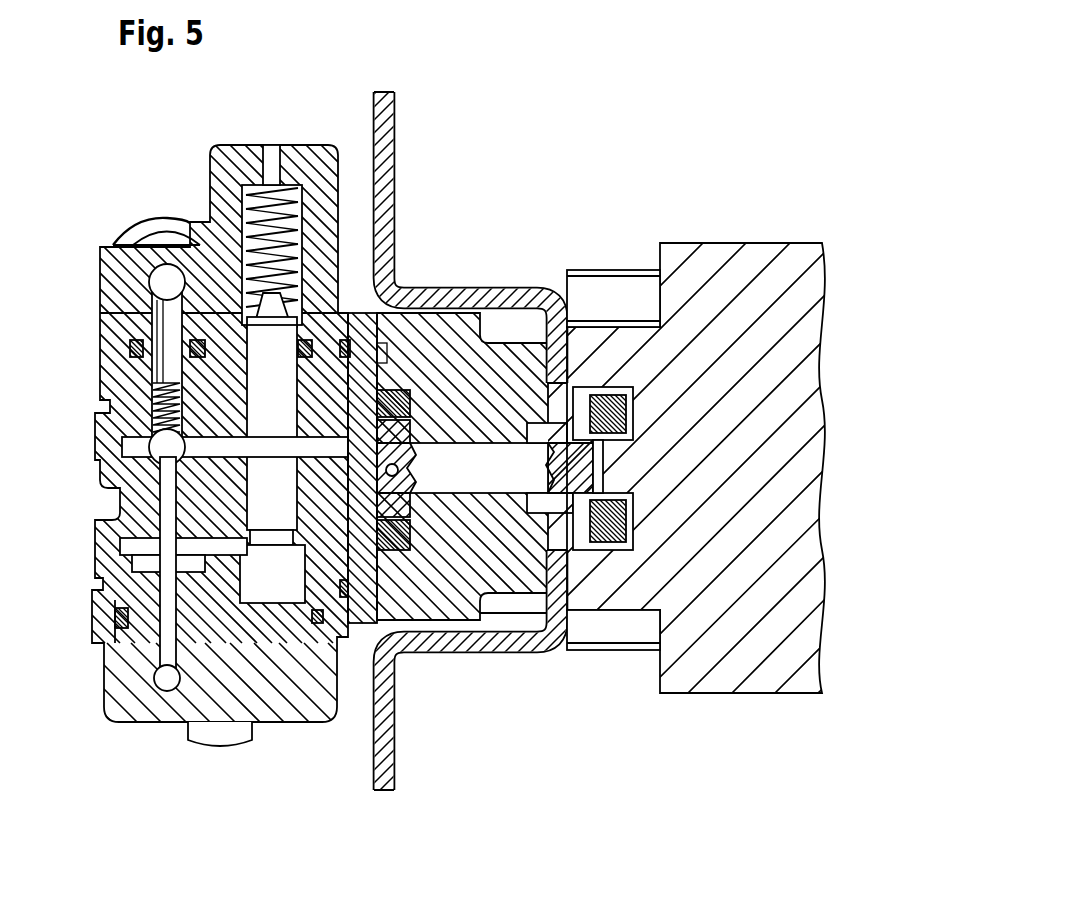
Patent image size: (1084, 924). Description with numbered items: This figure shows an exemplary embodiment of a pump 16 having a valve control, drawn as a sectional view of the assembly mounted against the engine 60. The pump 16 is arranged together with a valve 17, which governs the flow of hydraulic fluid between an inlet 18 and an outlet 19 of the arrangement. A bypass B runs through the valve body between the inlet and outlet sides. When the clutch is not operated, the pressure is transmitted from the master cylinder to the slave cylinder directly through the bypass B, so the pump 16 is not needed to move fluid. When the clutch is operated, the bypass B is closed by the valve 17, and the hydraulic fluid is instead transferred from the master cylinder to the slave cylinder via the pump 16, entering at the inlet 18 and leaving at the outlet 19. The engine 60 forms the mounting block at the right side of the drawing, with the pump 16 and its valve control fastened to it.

The pump 16 is at (452, 583).
The valve 17 is at (333, 597).
The inlet 18 is at (167, 682).
The outlet 19 is at (164, 447).
The bypass B is at (157, 497).
The engine 60 is at (683, 677).